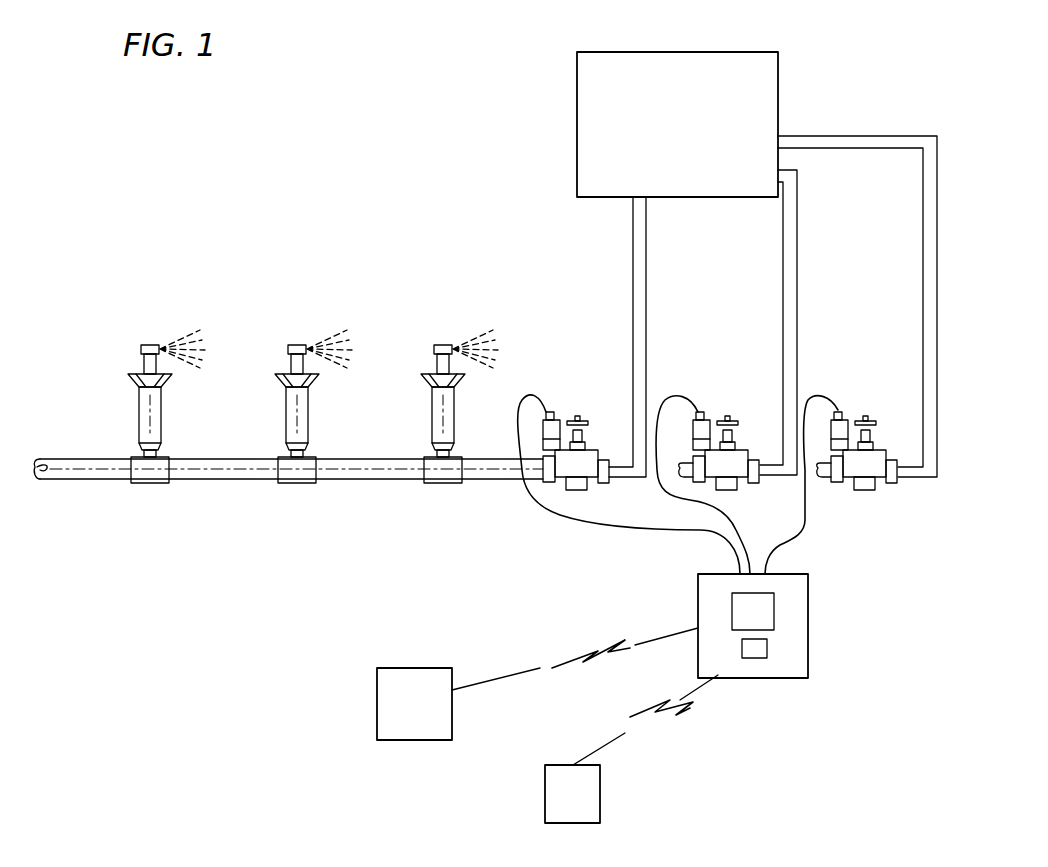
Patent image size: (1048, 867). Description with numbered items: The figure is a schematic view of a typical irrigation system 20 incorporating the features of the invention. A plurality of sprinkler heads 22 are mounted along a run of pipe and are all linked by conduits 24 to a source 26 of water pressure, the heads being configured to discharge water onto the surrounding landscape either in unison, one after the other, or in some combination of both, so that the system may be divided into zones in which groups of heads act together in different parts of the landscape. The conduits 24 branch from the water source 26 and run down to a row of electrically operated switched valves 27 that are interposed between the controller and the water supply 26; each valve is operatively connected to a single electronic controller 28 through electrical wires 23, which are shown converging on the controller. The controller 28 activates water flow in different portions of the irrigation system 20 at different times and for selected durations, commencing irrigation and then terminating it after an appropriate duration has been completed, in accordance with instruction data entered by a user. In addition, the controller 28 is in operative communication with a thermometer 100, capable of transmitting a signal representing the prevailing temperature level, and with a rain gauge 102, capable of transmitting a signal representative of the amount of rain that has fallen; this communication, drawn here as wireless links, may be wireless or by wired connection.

The irrigation system 20 is at (272, 193).
The sprinkler heads 22 is at (513, 313).
The electrical wires 23 is at (643, 533).
The conduits 24 is at (363, 481).
The source of water pressure 26 is at (778, 92).
The switched valves 27 is at (715, 425).
The electronic controller 28 is at (808, 628).
The thermometer 100 is at (403, 702).
The rain gauge 102 is at (558, 785).